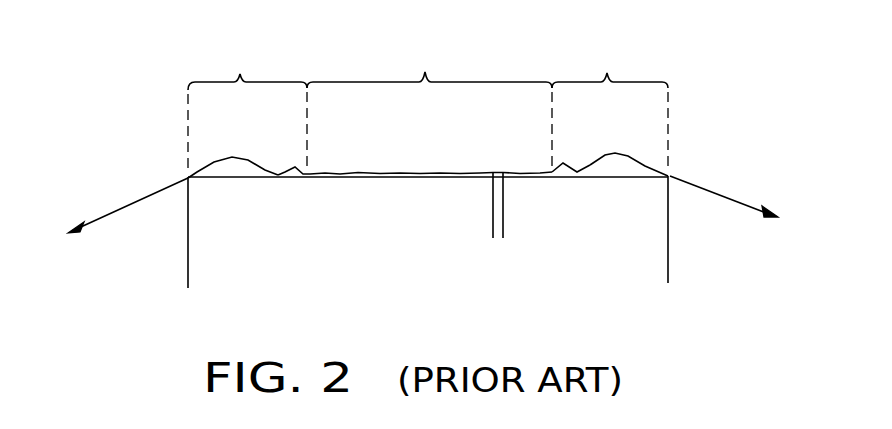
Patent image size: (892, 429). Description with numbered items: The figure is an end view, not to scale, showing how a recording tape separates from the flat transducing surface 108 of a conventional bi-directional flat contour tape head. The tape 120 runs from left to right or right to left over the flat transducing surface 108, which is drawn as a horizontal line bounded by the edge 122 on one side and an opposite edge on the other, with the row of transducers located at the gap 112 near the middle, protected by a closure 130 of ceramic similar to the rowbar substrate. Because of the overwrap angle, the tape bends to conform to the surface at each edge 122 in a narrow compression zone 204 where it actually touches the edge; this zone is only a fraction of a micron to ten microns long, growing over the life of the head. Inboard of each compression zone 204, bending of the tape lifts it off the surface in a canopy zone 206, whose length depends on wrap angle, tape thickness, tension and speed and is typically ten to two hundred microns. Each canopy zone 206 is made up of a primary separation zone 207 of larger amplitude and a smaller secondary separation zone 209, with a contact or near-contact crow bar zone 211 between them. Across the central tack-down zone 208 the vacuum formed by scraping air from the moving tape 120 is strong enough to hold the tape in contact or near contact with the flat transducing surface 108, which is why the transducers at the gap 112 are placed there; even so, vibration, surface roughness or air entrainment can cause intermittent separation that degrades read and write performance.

The flat transducing surface 108 is at (372, 175).
The gap 112 is at (495, 168).
The tape 120 is at (703, 192).
The edge 122 is at (183, 182).
The closure 130 is at (518, 175).
The compression zone 204 is at (185, 170).
The canopy zone 206 is at (240, 63).
The primary separation zone 207 is at (230, 155).
The tack-down zone 208 is at (425, 63).
The secondary separation zone 209 is at (298, 160).
The crow bar zone 211 is at (278, 182).